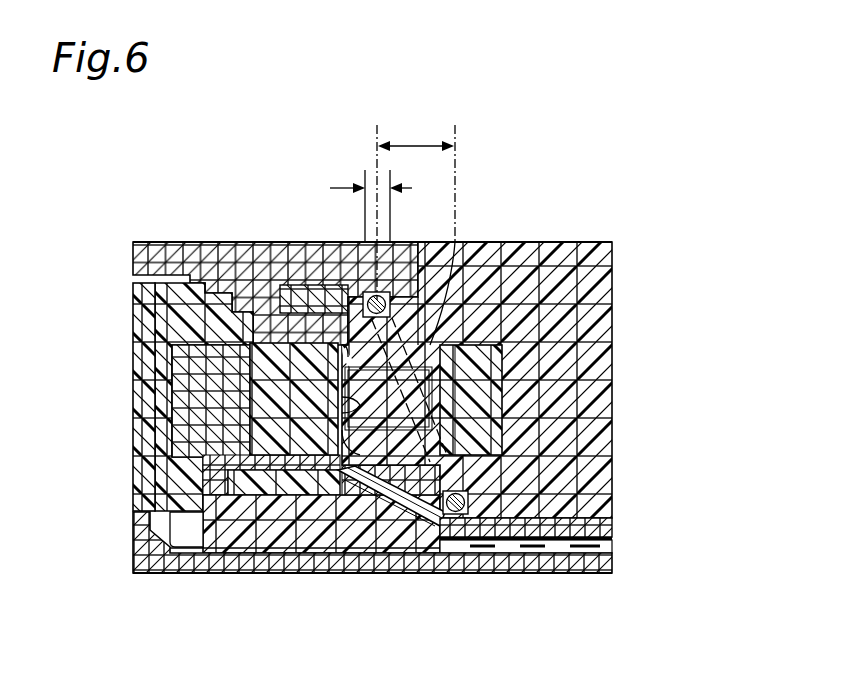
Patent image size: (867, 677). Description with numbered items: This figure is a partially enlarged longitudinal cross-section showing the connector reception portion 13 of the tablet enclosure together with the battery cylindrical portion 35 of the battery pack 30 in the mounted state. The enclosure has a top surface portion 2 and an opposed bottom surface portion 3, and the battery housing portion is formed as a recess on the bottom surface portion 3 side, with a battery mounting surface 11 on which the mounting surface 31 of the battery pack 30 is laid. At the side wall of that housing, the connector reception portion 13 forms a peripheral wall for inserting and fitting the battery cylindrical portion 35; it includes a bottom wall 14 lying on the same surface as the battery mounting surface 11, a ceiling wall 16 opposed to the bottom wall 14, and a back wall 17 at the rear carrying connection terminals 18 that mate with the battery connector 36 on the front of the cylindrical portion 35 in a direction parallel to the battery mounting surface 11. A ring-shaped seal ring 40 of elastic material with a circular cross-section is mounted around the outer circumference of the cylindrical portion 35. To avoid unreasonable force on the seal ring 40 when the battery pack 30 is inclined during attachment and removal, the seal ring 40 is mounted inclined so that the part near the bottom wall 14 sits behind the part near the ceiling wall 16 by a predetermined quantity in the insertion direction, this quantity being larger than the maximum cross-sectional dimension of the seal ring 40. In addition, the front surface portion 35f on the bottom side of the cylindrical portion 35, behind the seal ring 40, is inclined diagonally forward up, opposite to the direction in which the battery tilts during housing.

The top surface portion 2 is at (180, 577).
The bottom surface portion 3 is at (170, 238).
The battery mounting surface 11 is at (608, 514).
The connector reception portion 13 is at (330, 322).
The bottom wall 14 is at (344, 500).
The ceiling wall 16 is at (455, 242).
The back wall 17 is at (272, 500).
The connection terminals 18 is at (433, 383).
The battery pack 30 is at (568, 238).
The mounting surface 31 is at (565, 533).
The battery cylindrical portion 35 is at (364, 296).
The front surface portion 35f is at (382, 492).
The battery connector 36 is at (455, 300).
The seal ring 40 is at (460, 516).